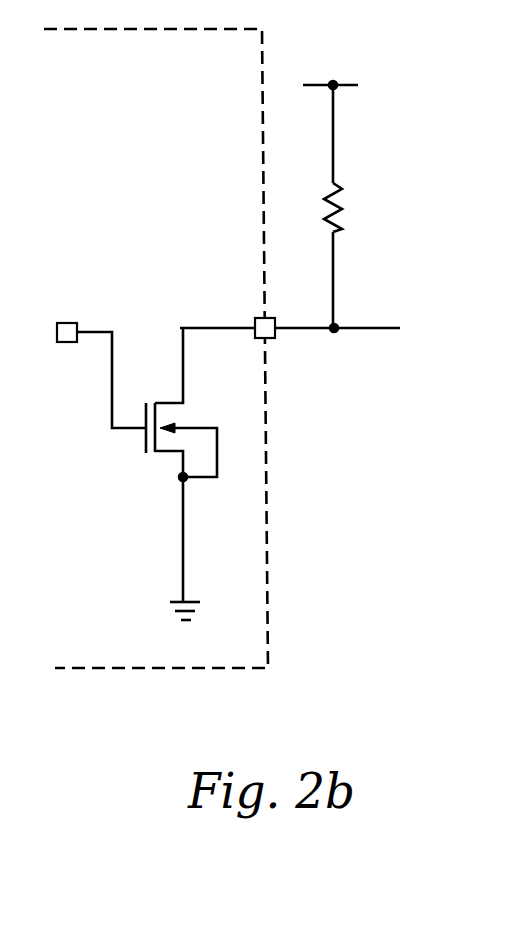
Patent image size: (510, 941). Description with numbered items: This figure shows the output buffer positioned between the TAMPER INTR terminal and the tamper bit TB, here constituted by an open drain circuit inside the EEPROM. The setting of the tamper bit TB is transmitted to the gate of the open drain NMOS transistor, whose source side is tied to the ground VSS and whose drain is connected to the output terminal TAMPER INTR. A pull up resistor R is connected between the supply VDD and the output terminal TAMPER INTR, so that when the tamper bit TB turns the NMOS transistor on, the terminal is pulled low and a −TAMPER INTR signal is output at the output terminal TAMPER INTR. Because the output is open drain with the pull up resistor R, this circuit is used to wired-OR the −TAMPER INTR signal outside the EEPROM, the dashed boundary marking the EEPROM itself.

The element EEPROM is at (61, 649).
The supply voltage node VDD is at (330, 112).
The pull up resistor R is at (345, 255).
The TAMPER INTR terminal TAMPER is at (290, 350).
The tamper bit TB is at (100, 362).
The open drain NMOS transistor NMOS is at (158, 410).
The ground VSS is at (207, 562).